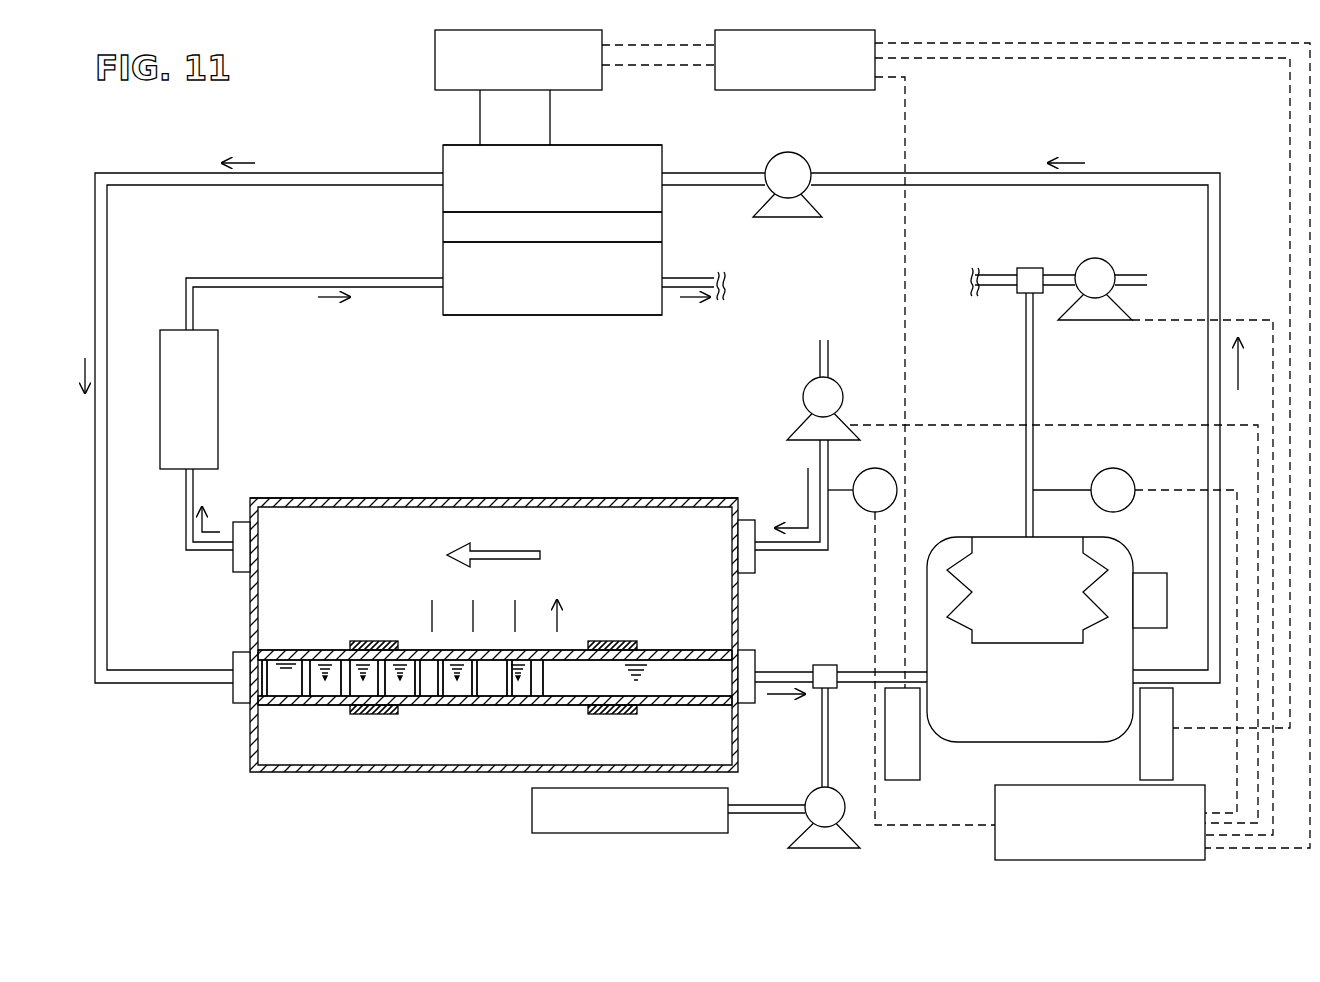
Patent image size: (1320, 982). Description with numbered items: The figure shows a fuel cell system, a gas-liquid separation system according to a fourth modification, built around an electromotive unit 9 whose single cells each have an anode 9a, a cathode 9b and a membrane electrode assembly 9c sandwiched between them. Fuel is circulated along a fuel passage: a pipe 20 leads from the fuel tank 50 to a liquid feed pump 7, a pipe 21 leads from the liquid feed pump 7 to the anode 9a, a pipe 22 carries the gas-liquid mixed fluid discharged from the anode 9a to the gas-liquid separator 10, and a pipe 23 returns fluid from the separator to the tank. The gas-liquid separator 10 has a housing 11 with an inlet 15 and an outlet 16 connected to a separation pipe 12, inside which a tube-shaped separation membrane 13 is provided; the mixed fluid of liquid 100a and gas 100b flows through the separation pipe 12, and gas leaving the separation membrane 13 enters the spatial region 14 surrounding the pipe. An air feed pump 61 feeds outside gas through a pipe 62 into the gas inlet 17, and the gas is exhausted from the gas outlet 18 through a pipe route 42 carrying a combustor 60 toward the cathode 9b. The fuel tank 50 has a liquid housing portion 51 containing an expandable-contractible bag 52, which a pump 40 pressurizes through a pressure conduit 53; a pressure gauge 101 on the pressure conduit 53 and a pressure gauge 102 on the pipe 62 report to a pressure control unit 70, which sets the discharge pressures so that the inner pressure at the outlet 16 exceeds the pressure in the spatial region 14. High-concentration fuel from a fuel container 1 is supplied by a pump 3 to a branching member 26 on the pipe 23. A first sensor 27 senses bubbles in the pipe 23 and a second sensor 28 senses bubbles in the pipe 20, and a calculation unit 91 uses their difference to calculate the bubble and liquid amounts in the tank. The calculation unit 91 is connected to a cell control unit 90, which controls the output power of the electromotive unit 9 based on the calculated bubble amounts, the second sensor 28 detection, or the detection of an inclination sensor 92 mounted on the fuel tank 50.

The fuel container 1 is at (532, 808).
The pump 3 is at (860, 841).
The liquid feed pump 7 is at (788, 152).
The electromotive unit 9 is at (700, 102).
The anode 9a is at (600, 150).
The cathode 9b is at (645, 252).
The membrane electrode assembly 9c is at (618, 222).
The gas-liquid separator 10 is at (506, 490).
The housing 11 is at (622, 498).
The separation pipe 12 is at (311, 650).
The separation membrane 13 is at (410, 700).
The spatial region 14 is at (312, 545).
The inlet 15 is at (240, 651).
The outlet 16 is at (752, 705).
The gas inlet 17 is at (748, 519).
The gas outlet 18 is at (240, 521).
The pipe 20 is at (876, 173).
The pipe 21 is at (718, 173).
The pipe 22 is at (305, 173).
The pipe 23 is at (850, 690).
The branching member 26 is at (827, 665).
The first sensor 27 is at (898, 781).
The second sensor 28 is at (1140, 760).
The pump 40 is at (1094, 257).
The pipe route 42 is at (313, 278).
The fuel tank 50 is at (965, 743).
The liquid housing portion 51 is at (1111, 733).
The bag 52 is at (1064, 641).
The pressure conduit 53 is at (1033, 373).
The combustor 60 is at (218, 398).
The air feed pump 61 is at (843, 397).
The pipe 62 is at (808, 551).
The pressure control unit 70 is at (995, 847).
The cell control unit 90 is at (435, 58).
The calculation unit 91 is at (830, 91).
The inclination sensor 92 is at (1167, 597).
The liquid 100a is at (284, 700).
The gas 100b is at (352, 700).
The pressure gauge 101 is at (1130, 507).
The pressure gauge 102 is at (897, 490).